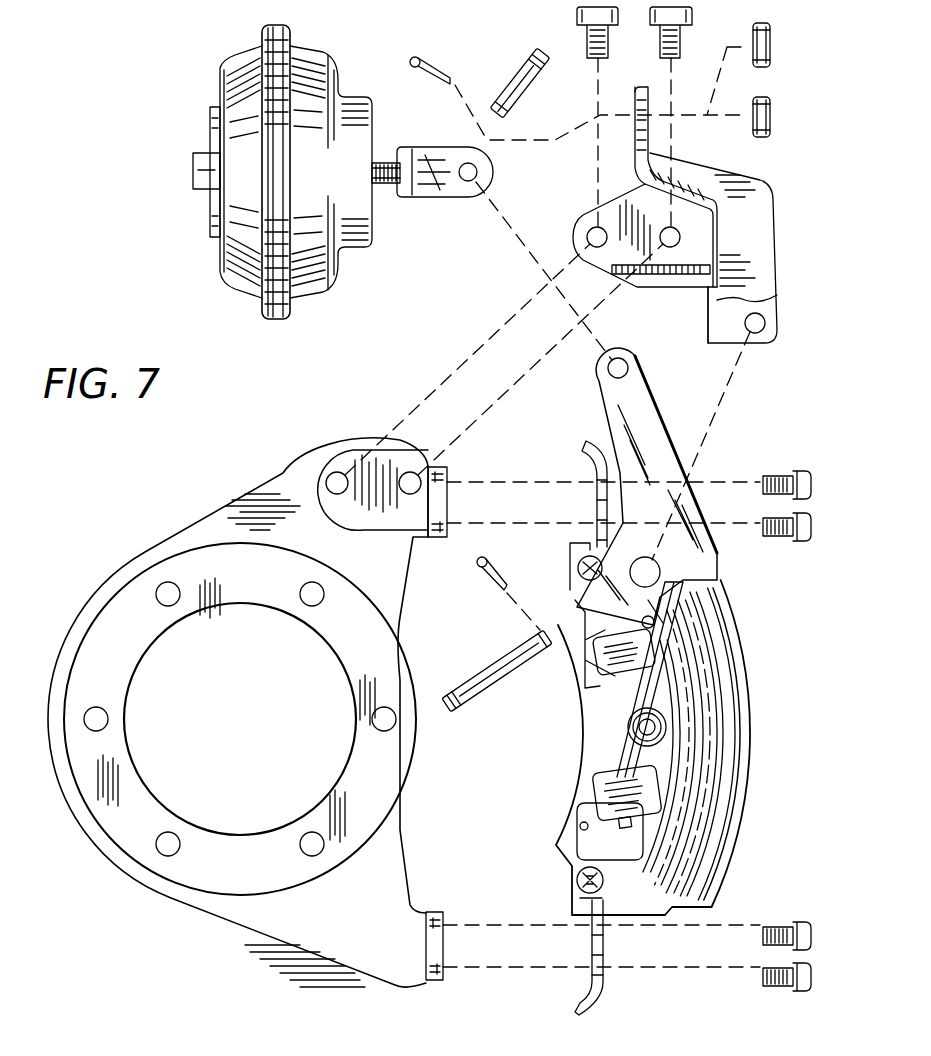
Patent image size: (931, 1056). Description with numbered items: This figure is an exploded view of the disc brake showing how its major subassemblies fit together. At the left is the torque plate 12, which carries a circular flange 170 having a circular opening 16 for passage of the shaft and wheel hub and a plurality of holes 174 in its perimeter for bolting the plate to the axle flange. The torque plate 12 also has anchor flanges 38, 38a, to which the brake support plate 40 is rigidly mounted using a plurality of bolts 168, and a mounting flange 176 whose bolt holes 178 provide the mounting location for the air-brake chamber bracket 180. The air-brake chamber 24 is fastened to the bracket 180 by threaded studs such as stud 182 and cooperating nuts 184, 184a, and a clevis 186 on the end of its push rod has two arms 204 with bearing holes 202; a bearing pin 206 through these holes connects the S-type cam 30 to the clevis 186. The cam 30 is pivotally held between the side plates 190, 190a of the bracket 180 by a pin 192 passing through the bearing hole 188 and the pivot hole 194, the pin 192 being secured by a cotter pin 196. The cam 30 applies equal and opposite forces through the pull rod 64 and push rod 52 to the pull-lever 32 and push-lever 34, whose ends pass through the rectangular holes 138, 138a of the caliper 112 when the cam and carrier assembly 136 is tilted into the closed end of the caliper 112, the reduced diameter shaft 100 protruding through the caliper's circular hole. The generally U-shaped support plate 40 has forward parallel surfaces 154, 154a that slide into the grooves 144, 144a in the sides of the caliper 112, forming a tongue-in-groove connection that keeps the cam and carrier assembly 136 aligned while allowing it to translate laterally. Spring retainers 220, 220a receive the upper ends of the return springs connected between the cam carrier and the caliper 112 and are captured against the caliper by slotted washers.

The torque plate 12 is at (89, 856).
The circular opening 16 is at (255, 716).
The air-brake chamber 24 is at (233, 72).
The S-type cam 30 is at (672, 409).
The pull-lever 32 is at (600, 665).
The push-lever 34 is at (595, 797).
The flange 38 is at (444, 468).
The flange 38a is at (437, 982).
The brake support plate 40 is at (610, 1003).
The push rod 52 is at (690, 600).
The pull rod 64 is at (580, 660).
The reduced diameter shaft 100 is at (628, 727).
The caliper 112 is at (750, 708).
The cam and carrier assembly 136 is at (756, 828).
The rectangular hole 138 is at (582, 823).
The rectangular hole 138a is at (655, 622).
The groove 144 is at (600, 905).
The groove 144a is at (570, 545).
The forward parallel surface 154 is at (605, 912).
The forward parallel surface 154a is at (600, 535).
The bolts 168 is at (806, 527).
The circular flange 170 is at (178, 892).
The holes 174 is at (304, 833).
The mounting flange 176 is at (350, 443).
The bolt holes 178 is at (352, 528).
The air-brake chamber bracket 180 is at (781, 190).
The threaded stud 182 is at (383, 186).
The nut 184 is at (770, 108).
The nut 184a is at (770, 30).
The clevis 186 is at (441, 208).
The bearing hole 188 is at (767, 320).
The side plate 190 is at (762, 222).
The side plate 190a is at (757, 340).
The pin 192 is at (486, 667).
The pivot hole 194 is at (660, 572).
The cotter pin 196 is at (482, 584).
The bearing hole 202 is at (480, 172).
The clevis arm 204 is at (437, 151).
The bearing pin 206 is at (513, 90).
The spring retainer 220 is at (577, 880).
The spring retainer 220a is at (578, 571).